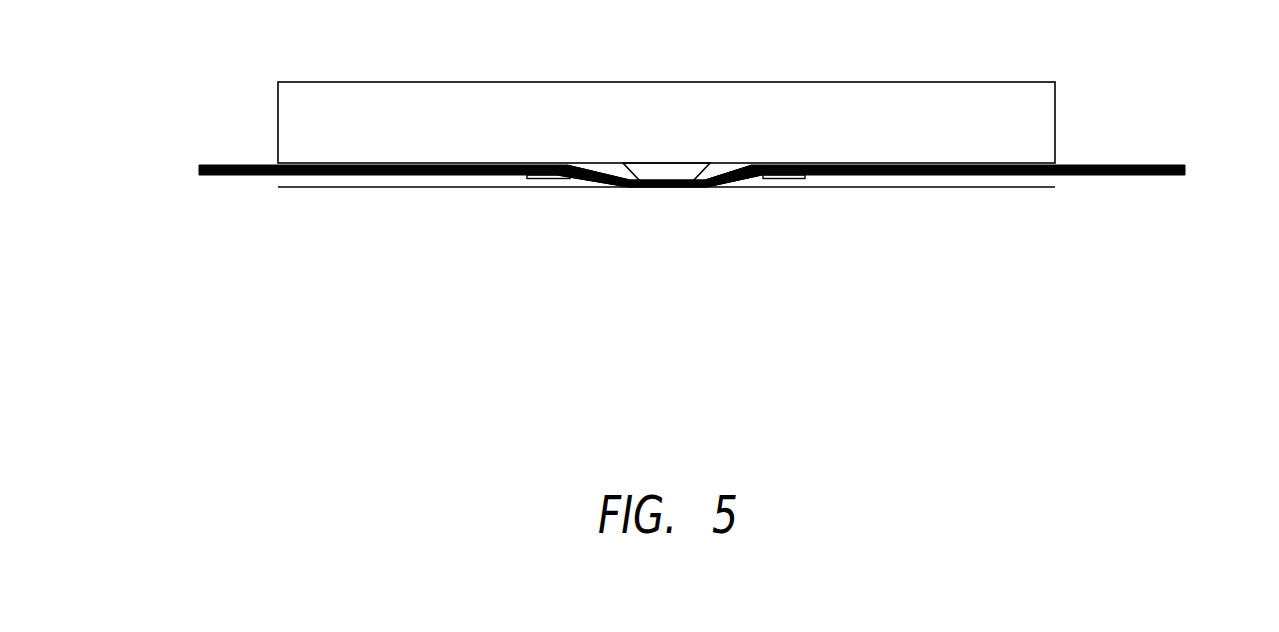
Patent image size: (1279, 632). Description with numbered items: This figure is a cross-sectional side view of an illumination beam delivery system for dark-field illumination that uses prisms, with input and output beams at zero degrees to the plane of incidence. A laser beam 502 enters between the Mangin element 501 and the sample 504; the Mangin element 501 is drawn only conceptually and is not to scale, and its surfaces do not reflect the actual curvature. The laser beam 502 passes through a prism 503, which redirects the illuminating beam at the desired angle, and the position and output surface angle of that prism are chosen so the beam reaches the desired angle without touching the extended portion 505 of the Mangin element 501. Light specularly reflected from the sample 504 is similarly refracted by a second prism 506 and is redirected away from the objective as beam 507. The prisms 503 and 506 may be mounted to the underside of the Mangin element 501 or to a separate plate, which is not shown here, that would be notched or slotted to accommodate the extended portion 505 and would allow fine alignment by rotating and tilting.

The Mangin element 501 is at (350, 81).
The laser beam 502 is at (224, 152).
The prism 503 is at (540, 179).
The sample 504 is at (727, 188).
The extended portion 505 is at (665, 164).
The prism 506 is at (790, 179).
The beam 507 is at (1111, 152).